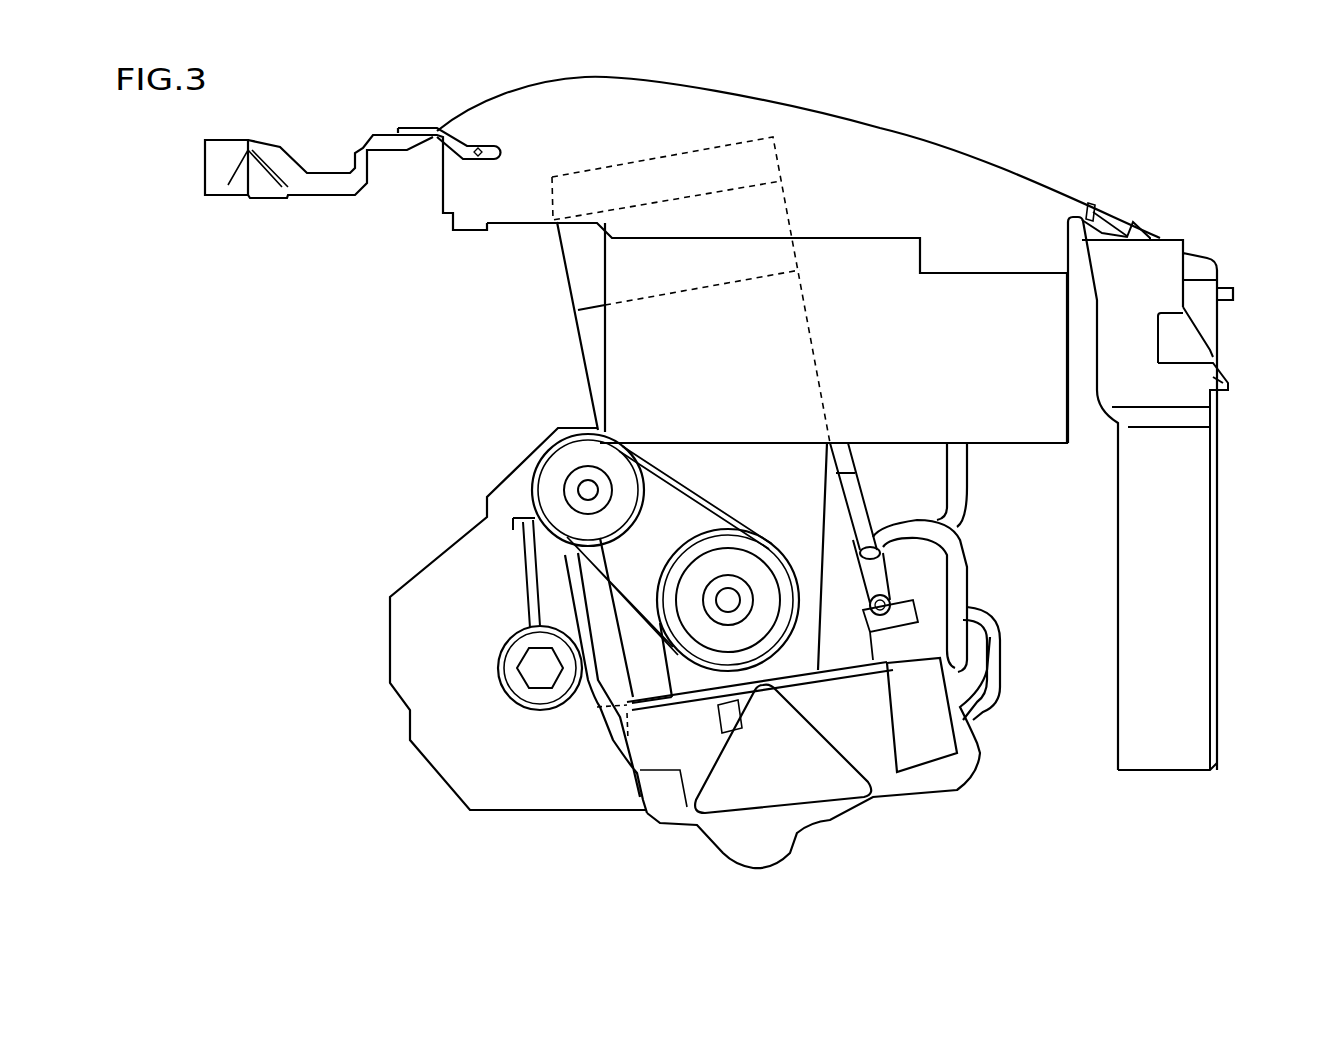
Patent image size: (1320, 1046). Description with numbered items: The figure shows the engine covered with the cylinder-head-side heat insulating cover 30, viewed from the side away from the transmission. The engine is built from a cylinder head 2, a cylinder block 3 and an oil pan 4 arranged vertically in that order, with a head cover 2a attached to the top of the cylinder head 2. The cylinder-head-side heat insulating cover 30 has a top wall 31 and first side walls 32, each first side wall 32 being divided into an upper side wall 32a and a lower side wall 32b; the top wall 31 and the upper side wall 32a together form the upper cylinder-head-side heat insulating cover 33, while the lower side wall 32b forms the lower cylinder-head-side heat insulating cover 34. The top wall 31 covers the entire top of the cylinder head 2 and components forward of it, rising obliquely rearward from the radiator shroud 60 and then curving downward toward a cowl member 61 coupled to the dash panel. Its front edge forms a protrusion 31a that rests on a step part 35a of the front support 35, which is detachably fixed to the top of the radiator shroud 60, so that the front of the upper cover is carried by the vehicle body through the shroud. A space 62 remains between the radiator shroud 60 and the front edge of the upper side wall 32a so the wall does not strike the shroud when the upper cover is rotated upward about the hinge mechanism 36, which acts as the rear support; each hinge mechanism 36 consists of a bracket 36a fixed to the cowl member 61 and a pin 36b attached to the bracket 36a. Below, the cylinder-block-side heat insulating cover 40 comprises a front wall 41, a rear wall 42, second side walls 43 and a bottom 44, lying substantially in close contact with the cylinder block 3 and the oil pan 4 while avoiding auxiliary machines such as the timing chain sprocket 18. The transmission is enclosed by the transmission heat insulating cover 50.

The cylinder head 2 is at (558, 273).
The head cover 2a is at (765, 162).
The cylinder block 3 is at (973, 543).
The oil pan 4 is at (645, 825).
The timing chain sprocket 18 is at (765, 555).
The cylinder-head-side heat insulating cover 30 is at (823, 306).
The top wall 31 is at (822, 112).
The protrusion 31a is at (1087, 203).
The first side wall 32 is at (997, 301).
The upper side wall 32a is at (885, 152).
The lower side wall 32b is at (1050, 423).
The upper cylinder-head-side heat insulating cover 33 is at (1010, 143).
The lower cylinder-head-side heat insulating cover 34 is at (1010, 450).
The front support 35 is at (1140, 233).
The step part 35a is at (1093, 210).
The hinge mechanism 36 is at (373, 144).
The bracket 36a is at (455, 150).
The pin 36b is at (477, 148).
The cylinder-block-side heat insulating cover 40 is at (764, 598).
The front wall 41 is at (820, 370).
The rear wall 42 is at (565, 333).
The second side wall 43 is at (640, 387).
The bottom 44 is at (783, 847).
The transmission heat insulating cover 50 is at (433, 597).
The radiator shroud 60 is at (1200, 488).
The cowl member 61 is at (247, 183).
The space 62 is at (1078, 250).